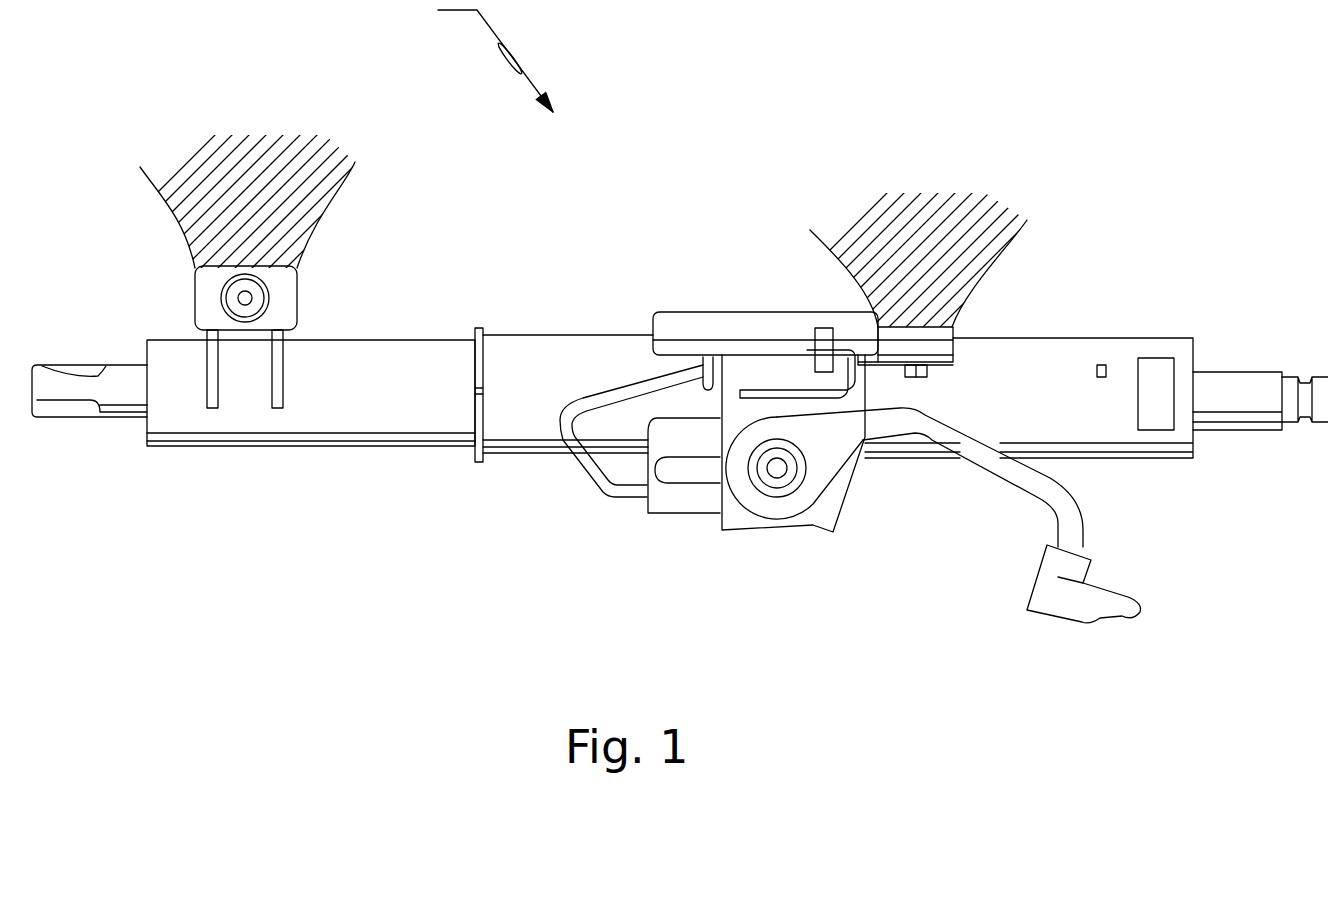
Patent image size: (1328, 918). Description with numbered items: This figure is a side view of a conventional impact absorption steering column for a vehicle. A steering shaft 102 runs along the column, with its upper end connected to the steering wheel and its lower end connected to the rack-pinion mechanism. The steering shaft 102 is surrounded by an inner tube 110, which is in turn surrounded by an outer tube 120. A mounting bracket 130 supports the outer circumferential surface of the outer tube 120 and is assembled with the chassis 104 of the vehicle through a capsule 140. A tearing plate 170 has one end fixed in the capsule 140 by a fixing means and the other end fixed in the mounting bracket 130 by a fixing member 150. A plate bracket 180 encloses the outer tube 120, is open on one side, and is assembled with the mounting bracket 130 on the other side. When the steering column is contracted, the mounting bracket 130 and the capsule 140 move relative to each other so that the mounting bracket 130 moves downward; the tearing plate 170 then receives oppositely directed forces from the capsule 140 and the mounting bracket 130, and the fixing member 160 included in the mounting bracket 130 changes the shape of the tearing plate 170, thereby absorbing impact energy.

The steering shaft 102 is at (90, 408).
The chassis 104 is at (988, 257).
The inner tube 110 is at (345, 427).
The outer tube 120 is at (537, 443).
The mounting bracket 130 is at (688, 318).
The capsule 140 is at (947, 333).
The fixing member 150 is at (927, 380).
The fixing member 160 is at (822, 370).
The tearing plate 170 is at (833, 395).
The plate bracket 180 is at (767, 367).